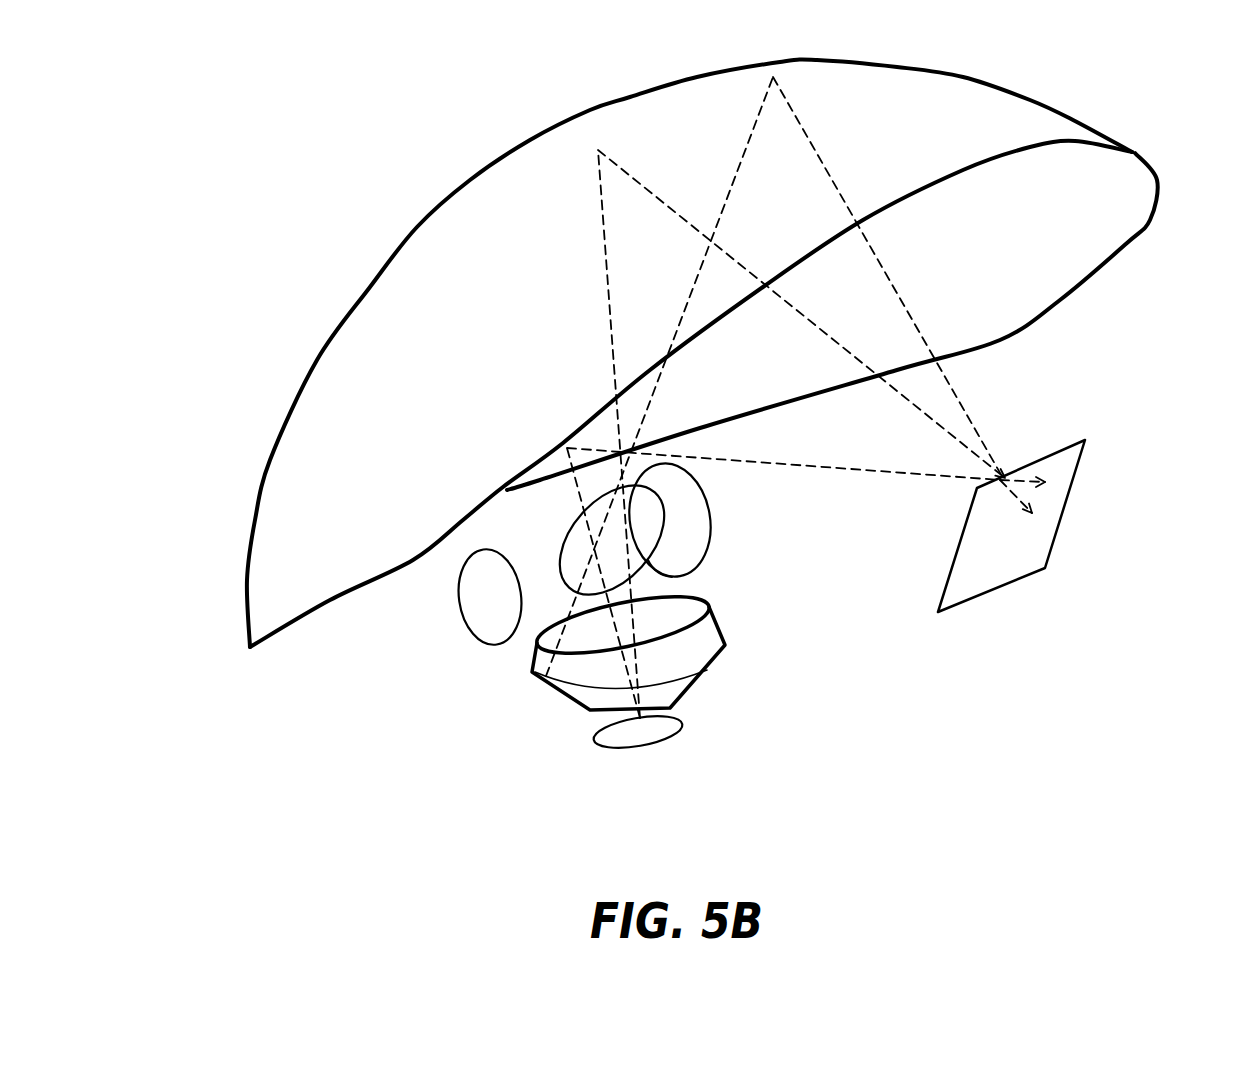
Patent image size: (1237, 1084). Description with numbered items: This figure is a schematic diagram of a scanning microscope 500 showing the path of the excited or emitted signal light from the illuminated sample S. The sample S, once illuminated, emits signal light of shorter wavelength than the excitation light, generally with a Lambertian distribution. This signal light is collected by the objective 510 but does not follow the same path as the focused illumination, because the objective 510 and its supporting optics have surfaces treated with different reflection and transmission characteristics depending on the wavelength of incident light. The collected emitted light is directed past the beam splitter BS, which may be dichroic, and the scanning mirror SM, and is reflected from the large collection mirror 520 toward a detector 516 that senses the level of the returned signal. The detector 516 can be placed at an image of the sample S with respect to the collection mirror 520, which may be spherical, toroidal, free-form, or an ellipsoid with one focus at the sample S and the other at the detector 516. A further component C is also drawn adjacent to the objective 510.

The scanning microscope 500 is at (304, 158).
The collection mirror 520 is at (1013, 305).
The detector 516 is at (967, 587).
The objective 510 is at (727, 638).
The sample S is at (682, 722).
The beam splitter BS is at (583, 520).
The scanning mirror SM is at (707, 530).
The camera C is at (492, 645).